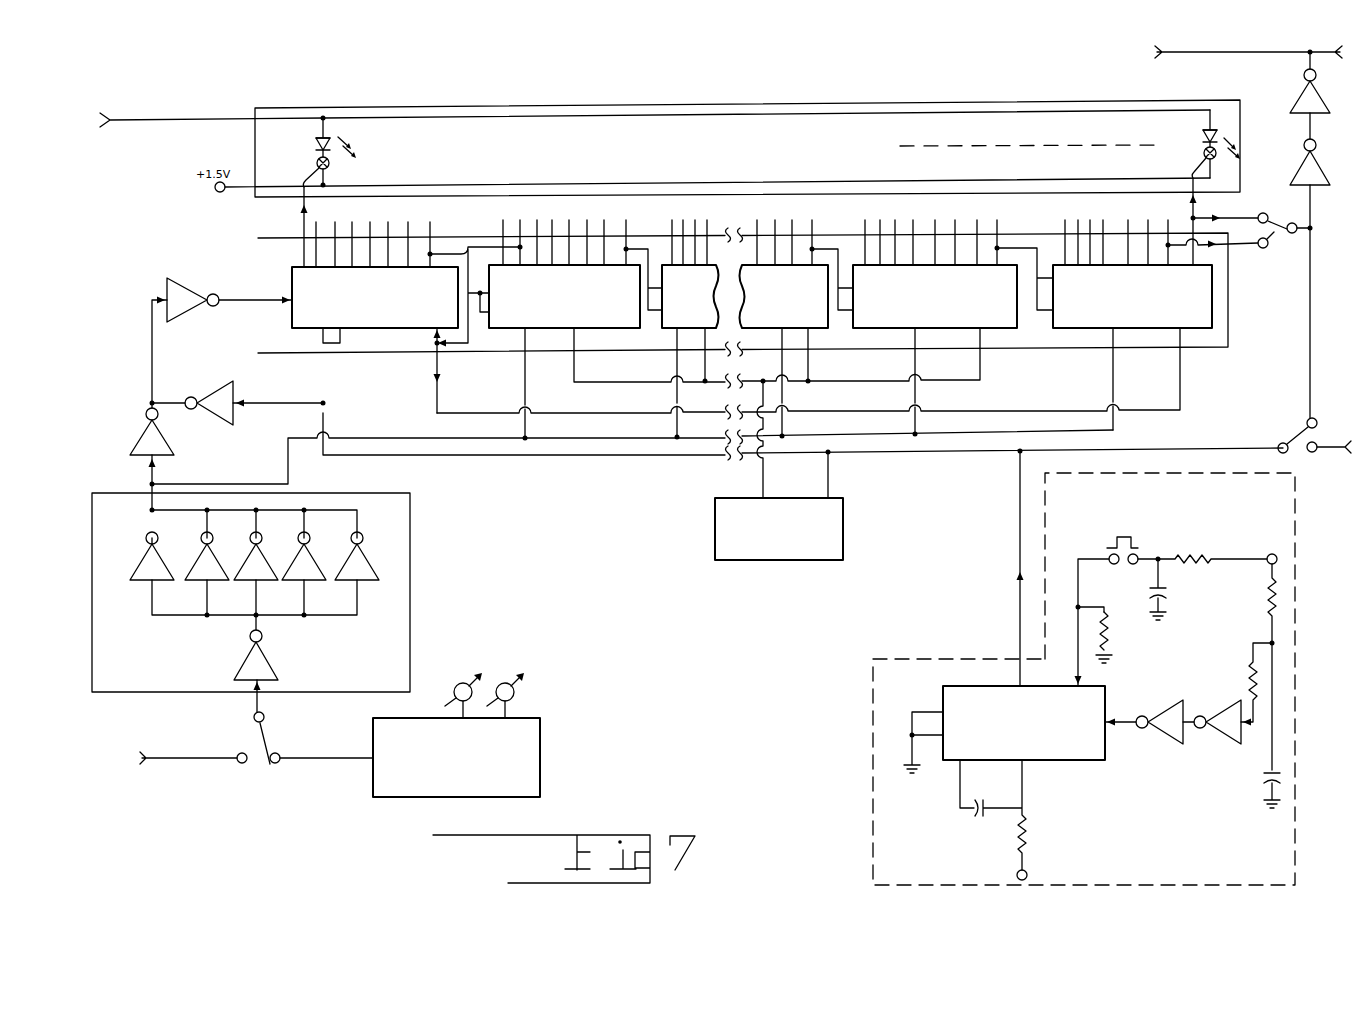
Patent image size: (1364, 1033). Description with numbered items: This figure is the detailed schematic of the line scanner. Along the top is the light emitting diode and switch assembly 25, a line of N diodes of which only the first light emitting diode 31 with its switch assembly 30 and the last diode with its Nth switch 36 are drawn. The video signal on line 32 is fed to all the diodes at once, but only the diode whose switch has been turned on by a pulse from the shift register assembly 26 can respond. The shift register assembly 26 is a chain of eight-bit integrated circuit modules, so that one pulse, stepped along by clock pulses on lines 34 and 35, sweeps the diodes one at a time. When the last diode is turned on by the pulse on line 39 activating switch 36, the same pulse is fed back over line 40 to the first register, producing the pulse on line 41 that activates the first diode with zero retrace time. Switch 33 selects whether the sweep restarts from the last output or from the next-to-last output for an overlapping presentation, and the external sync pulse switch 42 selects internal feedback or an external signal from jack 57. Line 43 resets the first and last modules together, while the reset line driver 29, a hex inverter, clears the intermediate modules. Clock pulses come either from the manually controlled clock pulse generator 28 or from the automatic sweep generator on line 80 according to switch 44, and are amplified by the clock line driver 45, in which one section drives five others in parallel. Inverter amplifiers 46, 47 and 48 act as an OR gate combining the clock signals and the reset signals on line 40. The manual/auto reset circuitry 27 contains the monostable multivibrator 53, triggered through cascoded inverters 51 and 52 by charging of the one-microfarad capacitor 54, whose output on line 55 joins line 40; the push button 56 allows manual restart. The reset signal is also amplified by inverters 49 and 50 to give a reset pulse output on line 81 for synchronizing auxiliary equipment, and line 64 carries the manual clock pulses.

The light emitting diode and switch assembly 25 is at (943, 103).
The shift register assembly 26 is at (1229, 331).
The manual/auto reset circuitry 27 is at (1217, 505).
The clock pulse generator 28 is at (542, 752).
The reset line driver 29 is at (845, 538).
The switch assembly 30 is at (338, 164).
The first light emitting diode 31 is at (310, 142).
The video signal line 32 is at (178, 119).
The N / N-1 switch 33 is at (1272, 248).
The clock pulse line 34 is at (288, 473).
The clock pulse line 35 is at (226, 289).
The last (Nth) switch 36 is at (1202, 154).
The line from last register 39 is at (1202, 217).
The reset bus line 40 is at (920, 451).
The line to first light emitting diode 41 is at (297, 228).
The external sync pulse switch 42 is at (1164, 220).
The reset line 43 is at (1153, 410).
The clock source switch 44 is at (276, 734).
The clock line driver 45 is at (410, 512).
The inverter amplifier 46 is at (134, 438).
The inverter amplifier 47 is at (207, 418).
The inverter amplifier 48 is at (191, 317).
The inverter amplifier 49 is at (1326, 174).
The inverter amplifier 50 is at (1319, 105).
The inverter amplifier 51 is at (1170, 708).
The inverter amplifier 52 is at (1228, 706).
The monostable multivibrator 53 is at (1078, 762).
The capacitor 54 is at (1266, 768).
The reset pulse line 55 is at (1020, 607).
The push button 56 is at (1137, 544).
The jack 57 is at (1350, 454).
The manual clock pulse line 64 is at (324, 758).
The pulse output line 80 is at (170, 760).
The reset pulse output line 81 is at (1224, 56).